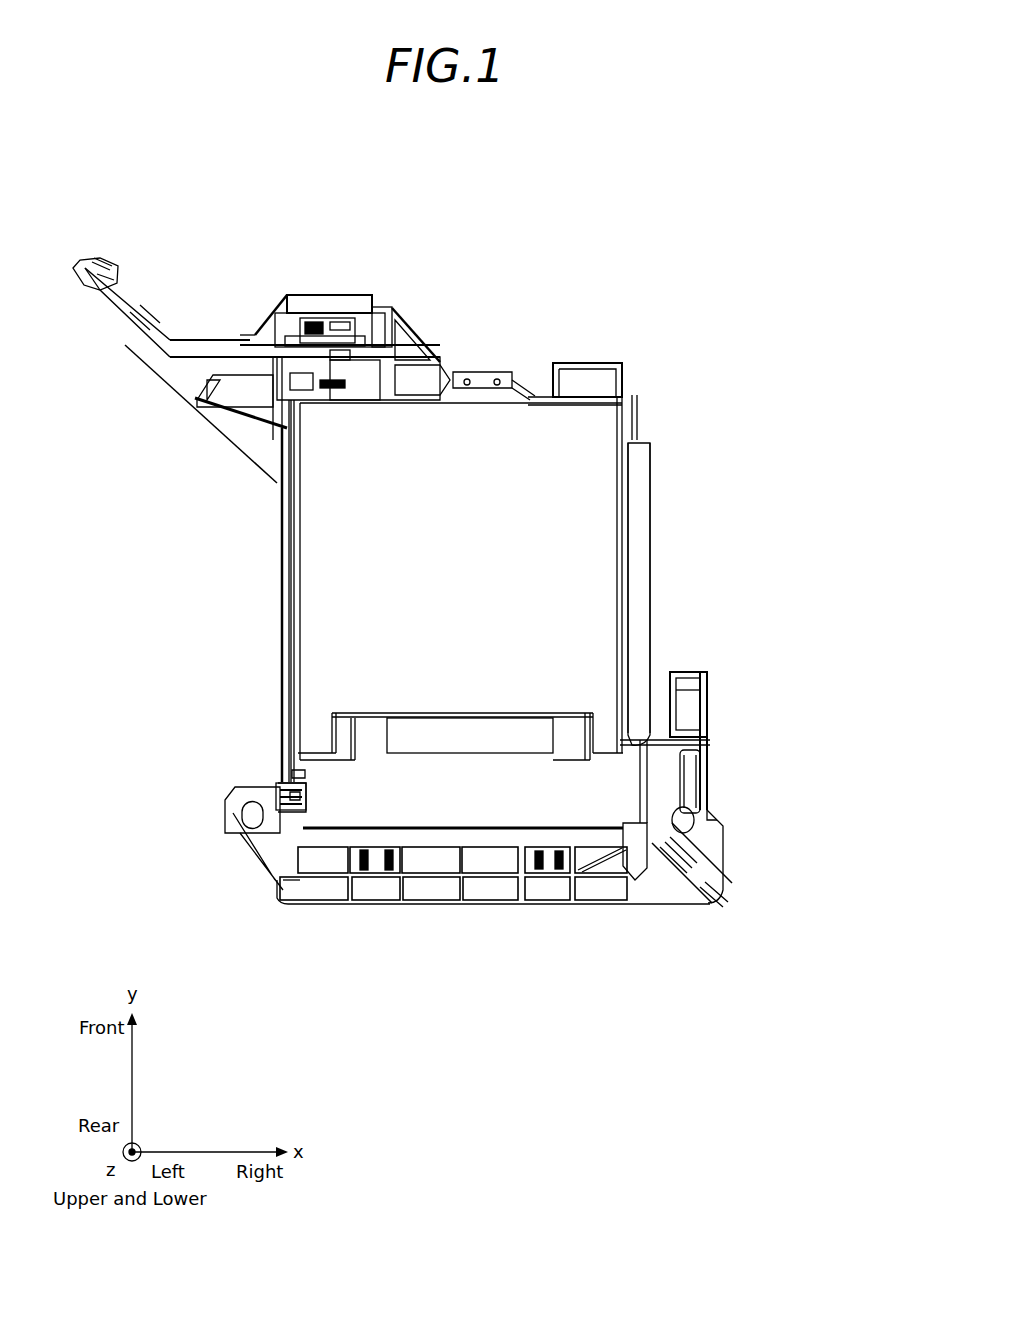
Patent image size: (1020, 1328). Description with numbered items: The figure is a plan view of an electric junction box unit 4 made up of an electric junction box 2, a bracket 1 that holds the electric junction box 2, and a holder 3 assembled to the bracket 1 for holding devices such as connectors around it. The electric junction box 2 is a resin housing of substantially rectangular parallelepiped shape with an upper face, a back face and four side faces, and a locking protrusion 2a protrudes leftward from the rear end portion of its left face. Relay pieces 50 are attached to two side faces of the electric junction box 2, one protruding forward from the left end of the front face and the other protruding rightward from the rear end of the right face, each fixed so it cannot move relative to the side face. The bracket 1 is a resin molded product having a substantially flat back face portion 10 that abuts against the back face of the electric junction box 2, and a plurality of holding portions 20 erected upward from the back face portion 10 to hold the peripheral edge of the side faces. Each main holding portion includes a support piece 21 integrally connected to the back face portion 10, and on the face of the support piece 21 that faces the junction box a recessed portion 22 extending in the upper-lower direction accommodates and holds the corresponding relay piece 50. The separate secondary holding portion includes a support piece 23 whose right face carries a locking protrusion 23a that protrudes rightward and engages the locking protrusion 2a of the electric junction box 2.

The bracket 1 is at (412, 314).
The electric junction box 2 is at (585, 458).
The locking protrusion 2a is at (300, 773).
The holder 3 is at (270, 571).
The electric junction box unit 4 is at (648, 246).
The back face portion 10 is at (450, 910).
The holding portions 20 is at (310, 297).
The support piece 21 is at (310, 347).
The recessed portion 22 is at (348, 357).
The support piece 23 is at (283, 797).
The locking protrusion 23a is at (297, 796).
The relay piece 50 is at (335, 377).